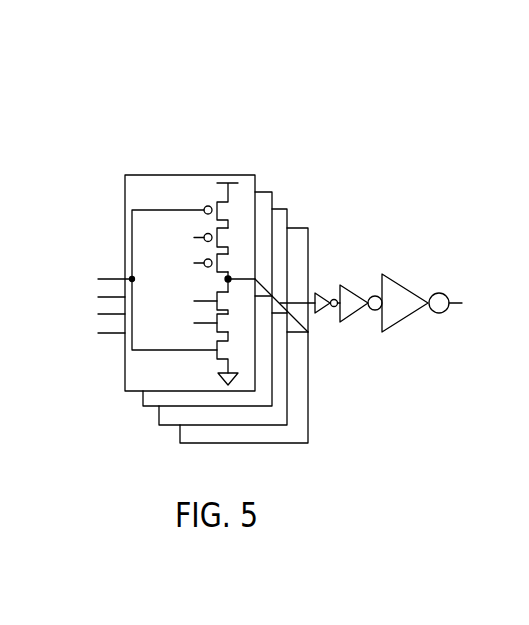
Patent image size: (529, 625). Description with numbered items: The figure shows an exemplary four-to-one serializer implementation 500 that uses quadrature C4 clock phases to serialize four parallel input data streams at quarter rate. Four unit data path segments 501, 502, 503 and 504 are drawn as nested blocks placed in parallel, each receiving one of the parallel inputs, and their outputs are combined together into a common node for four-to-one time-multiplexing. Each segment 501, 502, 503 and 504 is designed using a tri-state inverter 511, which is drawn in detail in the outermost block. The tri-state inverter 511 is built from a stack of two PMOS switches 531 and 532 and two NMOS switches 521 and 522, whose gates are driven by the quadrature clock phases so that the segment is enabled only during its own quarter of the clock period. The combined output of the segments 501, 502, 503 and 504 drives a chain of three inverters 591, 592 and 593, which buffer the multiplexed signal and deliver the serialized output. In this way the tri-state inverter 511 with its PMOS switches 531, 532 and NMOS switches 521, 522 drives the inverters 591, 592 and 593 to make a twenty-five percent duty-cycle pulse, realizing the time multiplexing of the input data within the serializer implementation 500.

The 4:1 serializer implementation 500 is at (181, 88).
The tri-state inverter 511 is at (223, 168).
The segment 501 is at (255, 175).
The segment 502 is at (272, 192).
The segment 503 is at (287, 209).
The segment 504 is at (308, 228).
The PMOS switch 531 is at (239, 237).
The PMOS switch 532 is at (239, 263).
The NMOS switch 521 is at (239, 325).
The NMOS switch 522 is at (239, 302).
The inverter 591 is at (325, 314).
The inverter 592 is at (355, 322).
The inverter 593 is at (410, 317).